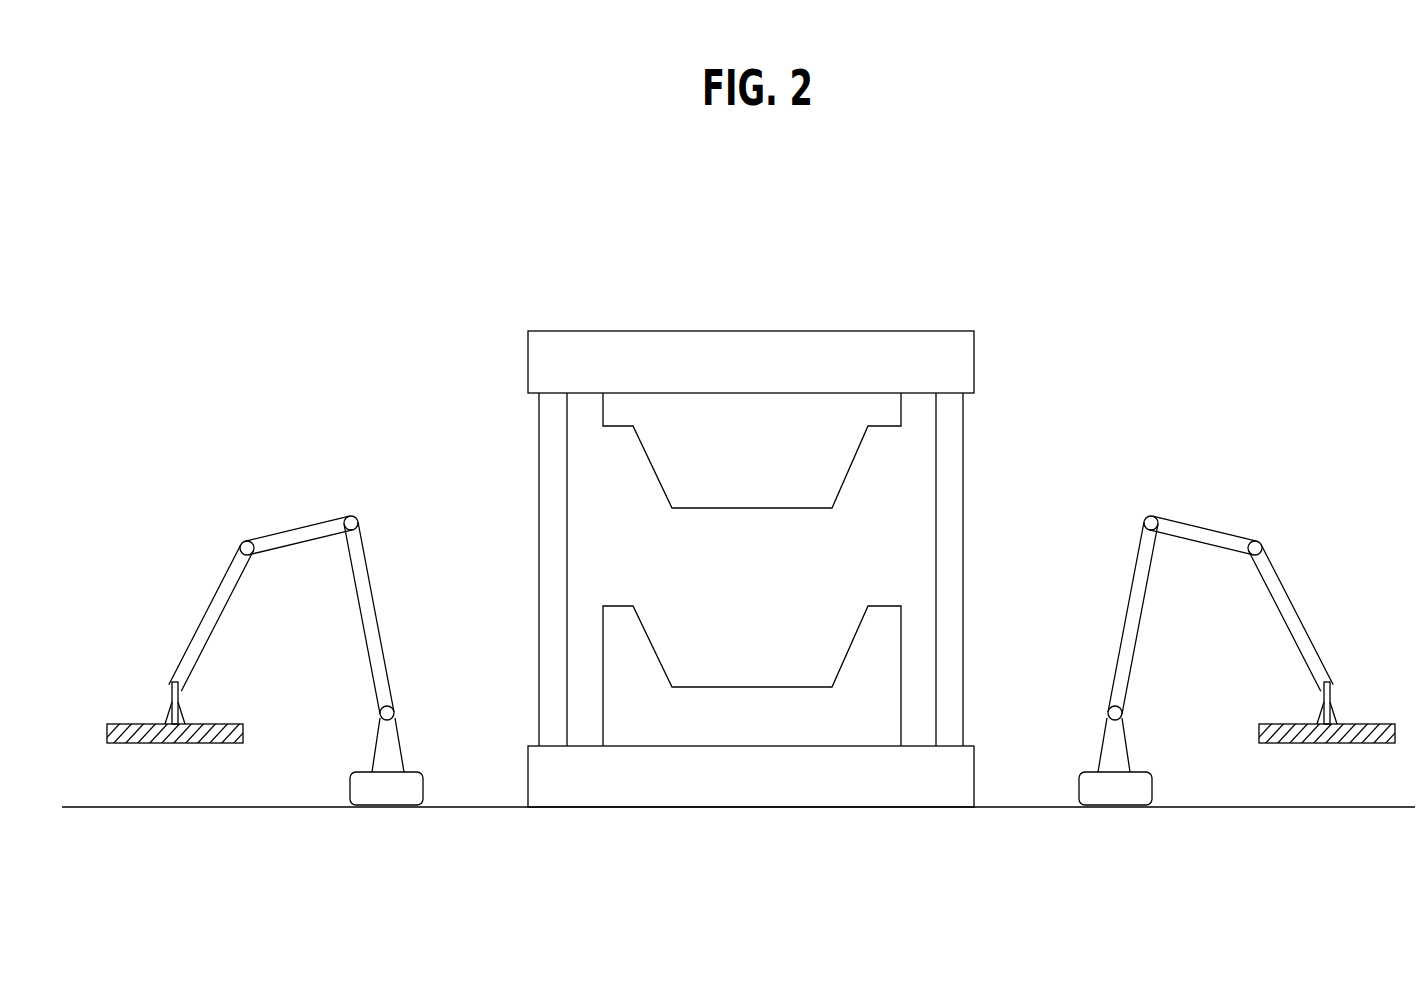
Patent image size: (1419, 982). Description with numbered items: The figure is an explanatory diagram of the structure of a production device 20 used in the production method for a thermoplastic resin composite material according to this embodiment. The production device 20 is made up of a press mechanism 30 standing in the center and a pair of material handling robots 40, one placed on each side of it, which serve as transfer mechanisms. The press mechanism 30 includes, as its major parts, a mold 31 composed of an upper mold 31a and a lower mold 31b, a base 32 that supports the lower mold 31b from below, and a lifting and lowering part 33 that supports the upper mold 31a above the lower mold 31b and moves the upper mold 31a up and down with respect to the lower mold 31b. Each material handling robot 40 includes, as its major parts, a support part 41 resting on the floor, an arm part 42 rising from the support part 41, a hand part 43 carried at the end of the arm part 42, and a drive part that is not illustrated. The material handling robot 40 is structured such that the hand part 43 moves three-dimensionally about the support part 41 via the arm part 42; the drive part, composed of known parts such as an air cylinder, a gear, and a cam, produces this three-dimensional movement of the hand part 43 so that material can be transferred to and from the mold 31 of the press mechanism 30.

The production device 20 is at (1092, 232).
The press mechanism 30 is at (802, 278).
The mold 31 is at (1073, 455).
The upper mold 31a is at (852, 470).
The lower mold 31b is at (901, 628).
The base 32 is at (958, 776).
The lifting and lowering part 33 is at (960, 362).
The material handling robot 40 is at (288, 462).
The support part 41 is at (420, 775).
The arm part 42 is at (378, 617).
The hand part 43 is at (222, 723).